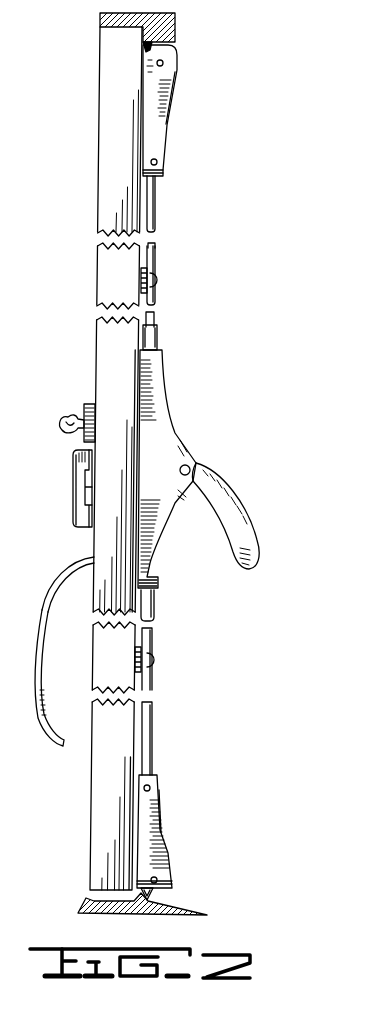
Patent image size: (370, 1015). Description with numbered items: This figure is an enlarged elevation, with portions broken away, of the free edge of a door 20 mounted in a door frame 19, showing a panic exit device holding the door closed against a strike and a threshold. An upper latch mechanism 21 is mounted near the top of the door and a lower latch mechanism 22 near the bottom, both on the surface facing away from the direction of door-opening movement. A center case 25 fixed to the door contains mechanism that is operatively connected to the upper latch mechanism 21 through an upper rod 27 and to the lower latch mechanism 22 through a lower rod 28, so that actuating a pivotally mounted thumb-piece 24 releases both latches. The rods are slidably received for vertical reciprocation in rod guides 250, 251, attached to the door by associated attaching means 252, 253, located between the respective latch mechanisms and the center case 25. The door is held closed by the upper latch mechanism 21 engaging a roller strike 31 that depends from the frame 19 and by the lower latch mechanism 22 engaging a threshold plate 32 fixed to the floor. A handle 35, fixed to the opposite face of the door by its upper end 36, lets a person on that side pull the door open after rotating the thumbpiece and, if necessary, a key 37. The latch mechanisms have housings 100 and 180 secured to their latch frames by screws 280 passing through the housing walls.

The door frame 19 is at (175, 24).
The door 20 is at (110, 182).
The upper latch mechanism 21 is at (180, 114).
The lower latch mechanism 22 is at (170, 843).
The thumb-piece 24 is at (77, 490).
The center case 25 is at (156, 399).
The upper rod 27 is at (153, 204).
The lower rod 28 is at (149, 743).
The roller strike 31 is at (143, 49).
The threshold plate 32 is at (90, 900).
The handle 35 is at (46, 610).
The upper end of handle 36 is at (64, 560).
The key 37 is at (65, 418).
The housing 100 is at (172, 95).
The housing 180 is at (163, 828).
The rod guide 250 is at (160, 280).
The rod guide 251 is at (160, 660).
The attaching means 252 is at (139, 283).
The attaching means 253 is at (134, 665).
The screws 280 is at (165, 66).